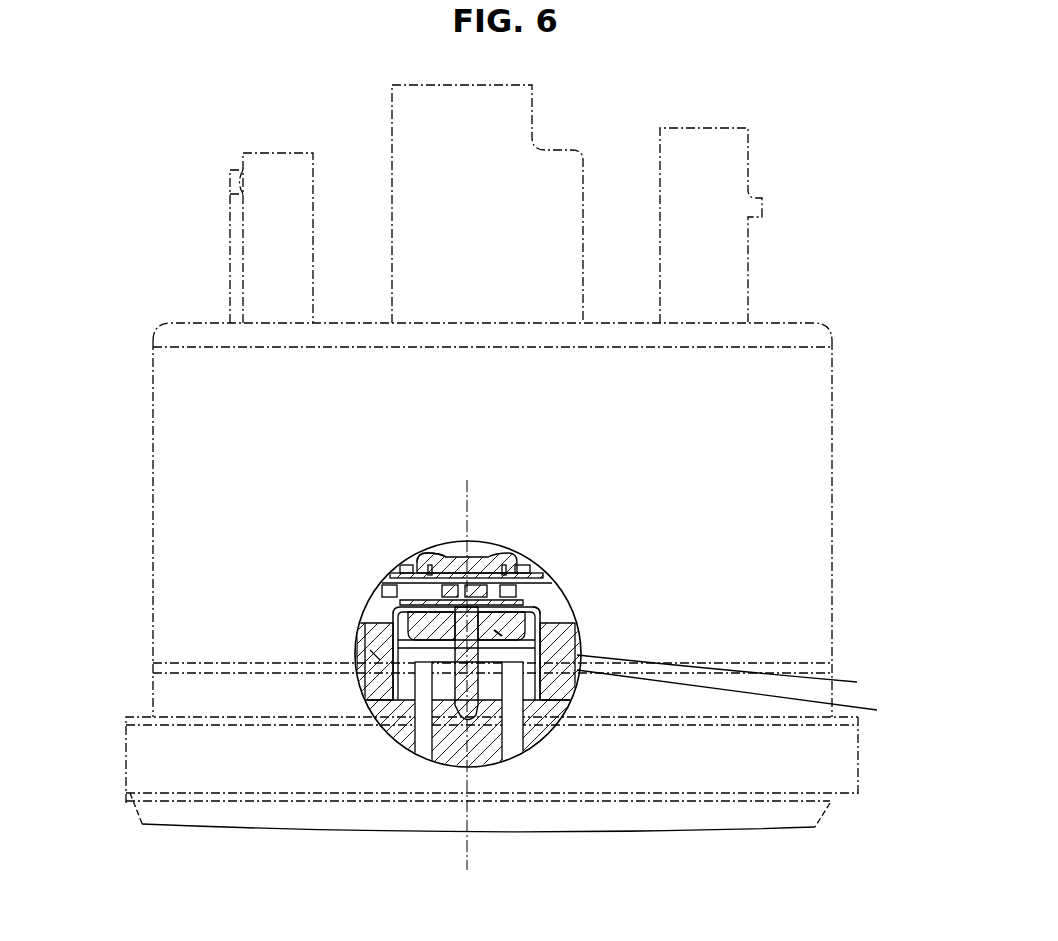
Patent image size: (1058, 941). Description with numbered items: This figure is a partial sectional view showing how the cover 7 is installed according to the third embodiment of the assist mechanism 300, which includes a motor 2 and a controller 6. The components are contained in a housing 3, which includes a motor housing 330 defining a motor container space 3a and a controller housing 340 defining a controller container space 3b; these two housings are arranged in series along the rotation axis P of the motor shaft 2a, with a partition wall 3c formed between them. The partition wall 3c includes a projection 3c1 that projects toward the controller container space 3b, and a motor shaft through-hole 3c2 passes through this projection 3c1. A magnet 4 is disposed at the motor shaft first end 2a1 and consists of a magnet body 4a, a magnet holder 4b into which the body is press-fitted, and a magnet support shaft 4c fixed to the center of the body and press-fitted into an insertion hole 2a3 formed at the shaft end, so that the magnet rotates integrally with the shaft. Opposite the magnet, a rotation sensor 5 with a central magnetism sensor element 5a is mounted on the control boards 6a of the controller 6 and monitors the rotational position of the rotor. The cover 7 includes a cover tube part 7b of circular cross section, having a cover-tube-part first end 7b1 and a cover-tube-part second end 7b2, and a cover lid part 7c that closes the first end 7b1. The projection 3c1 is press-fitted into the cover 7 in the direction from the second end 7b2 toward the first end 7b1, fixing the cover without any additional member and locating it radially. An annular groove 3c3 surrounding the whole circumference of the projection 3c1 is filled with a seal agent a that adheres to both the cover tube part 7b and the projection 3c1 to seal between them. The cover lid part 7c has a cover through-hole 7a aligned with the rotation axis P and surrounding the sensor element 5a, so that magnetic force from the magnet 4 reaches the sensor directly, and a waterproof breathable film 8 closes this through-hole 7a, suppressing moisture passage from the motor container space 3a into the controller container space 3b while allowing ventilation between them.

The assist mechanism 300 is at (812, 218).
The motor 2 is at (882, 754).
The motor shaft 2a is at (492, 720).
The motor shaft first end 2a1 is at (741, 679).
The insertion hole 2a3 is at (473, 735).
The housing 3 is at (125, 466).
The motor container space 3a is at (228, 758).
The controller container space 3b is at (258, 518).
The partition wall 3c is at (405, 705).
The projection 3c1 is at (748, 699).
The motor shaft through-hole 3c2 is at (518, 705).
The annular groove 3c3 is at (578, 690).
The magnet 4 is at (410, 650).
The magnet body 4a is at (510, 622).
The magnet holder 4b is at (362, 650).
The magnet support shaft 4c is at (466, 722).
The rotation sensor 5 is at (488, 598).
The magnetism sensor element 5a is at (445, 560).
The controller 6 is at (185, 310).
The control boards 6a is at (400, 566).
The cover 7 is at (393, 612).
The cover through-hole 7a is at (412, 572).
The cover tube part 7b is at (576, 630).
The cover-tube-part first end 7b1 is at (542, 612).
The cover-tube-part second end 7b2 is at (422, 718).
The cover lid part 7c is at (500, 630).
The waterproof breathable film 8 is at (392, 580).
The motor housing 330 is at (128, 794).
The controller housing 340 is at (176, 391).
The seal agent a is at (380, 706).
The rotation axis P is at (468, 876).